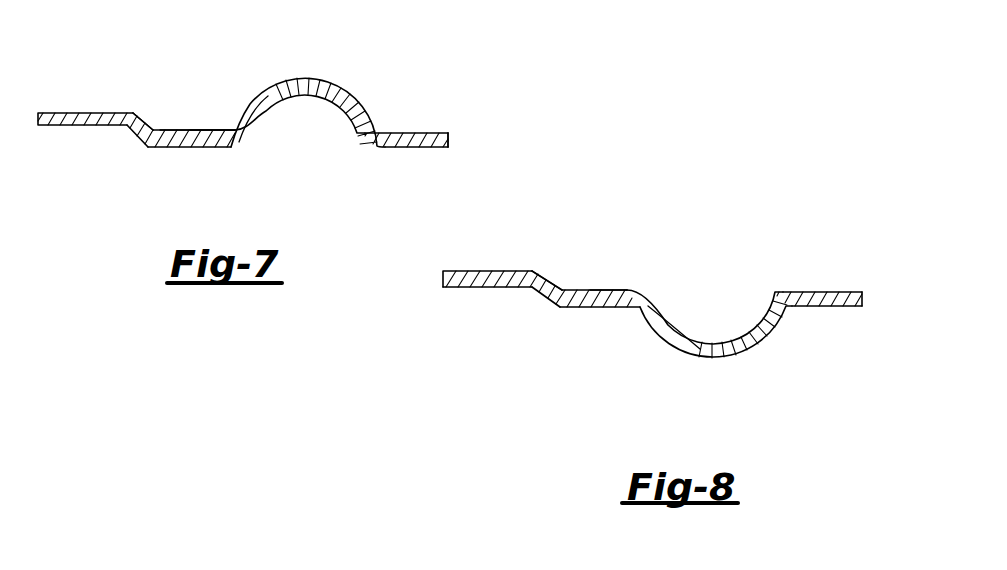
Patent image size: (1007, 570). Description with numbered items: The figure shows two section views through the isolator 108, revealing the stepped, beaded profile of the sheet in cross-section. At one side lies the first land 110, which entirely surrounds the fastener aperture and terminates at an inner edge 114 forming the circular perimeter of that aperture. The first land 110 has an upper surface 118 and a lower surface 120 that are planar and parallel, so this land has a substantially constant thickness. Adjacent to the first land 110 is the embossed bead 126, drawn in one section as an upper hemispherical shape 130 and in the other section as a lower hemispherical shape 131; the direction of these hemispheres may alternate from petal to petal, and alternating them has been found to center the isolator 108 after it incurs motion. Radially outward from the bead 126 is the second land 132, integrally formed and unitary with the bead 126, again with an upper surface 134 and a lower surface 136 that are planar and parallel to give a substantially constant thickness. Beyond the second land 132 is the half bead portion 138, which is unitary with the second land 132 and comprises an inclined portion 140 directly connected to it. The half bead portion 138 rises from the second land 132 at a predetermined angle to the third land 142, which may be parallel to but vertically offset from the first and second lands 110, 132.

In FIG. 7, the isolator 108 is at (320, 77).
In FIG. 8, the isolator 108 is at (752, 352).
In FIG. 7, the first land 110 is at (420, 133).
In FIG. 8, the first land 110 is at (832, 290).
In FIG. 7, the inner edge 114 is at (450, 142).
In FIG. 8, the inner edge 114 is at (442, 278).
In FIG. 7, the upper surface 118 is at (395, 133).
In FIG. 8, the upper surface 118 is at (803, 290).
In FIG. 7, the lower surface 120 is at (407, 149).
In FIG. 8, the lower surface 120 is at (840, 308).
In FIG. 7, the embossed bead 126 is at (297, 80).
In FIG. 8, the embossed bead 126 is at (697, 358).
In FIG. 7, the upper hemispherical shape 130 is at (263, 100).
In FIG. 8, the lower hemispherical shape 131 is at (730, 358).
In FIG. 7, the second land 132 is at (172, 130).
In FIG. 8, the second land 132 is at (593, 308).
In FIG. 7, the upper surface 134 is at (202, 130).
In FIG. 8, the upper surface 134 is at (622, 290).
In FIG. 7, the lower surface 136 is at (183, 147).
In FIG. 8, the lower surface 136 is at (625, 307).
In FIG. 7, the half bead portion 138 is at (132, 128).
In FIG. 8, the half bead portion 138 is at (543, 298).
In FIG. 7, the inclined portion 140 is at (145, 118).
In FIG. 8, the inclined portion 140 is at (561, 289).
In FIG. 7, the third land 142 is at (68, 113).
In FIG. 8, the third land 142 is at (493, 271).